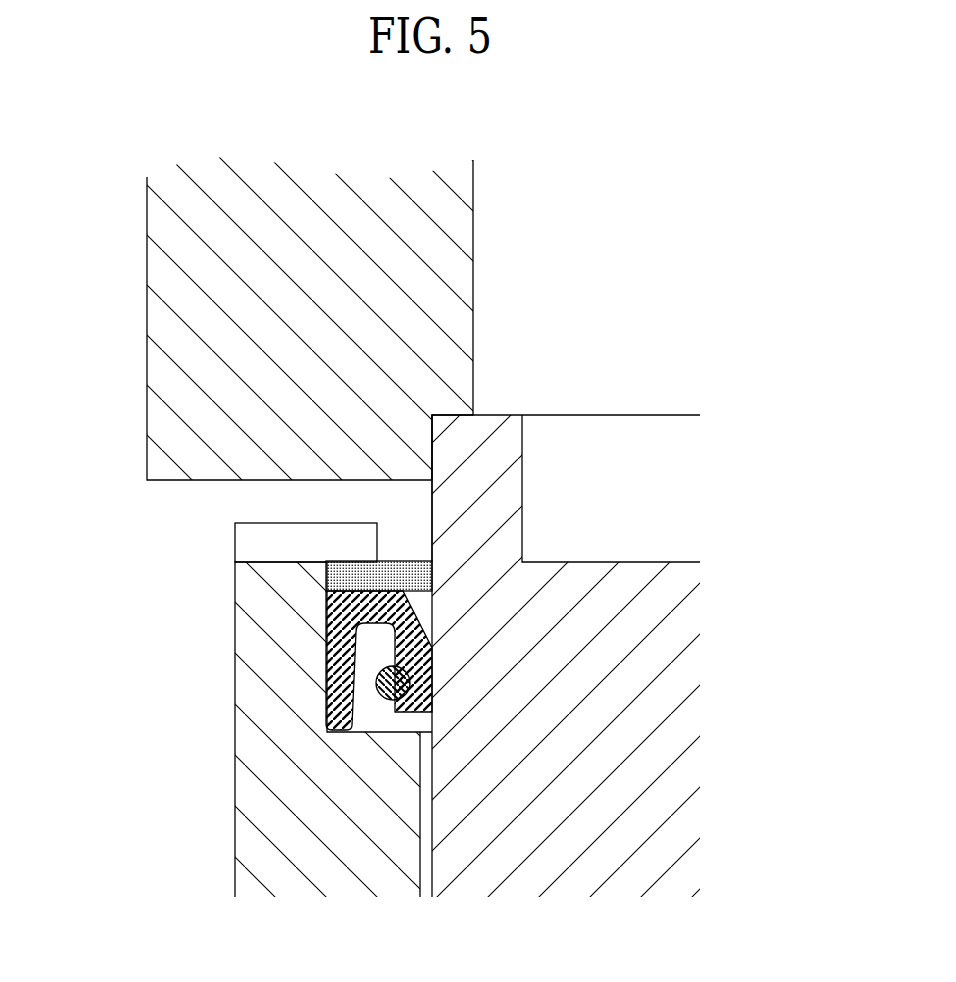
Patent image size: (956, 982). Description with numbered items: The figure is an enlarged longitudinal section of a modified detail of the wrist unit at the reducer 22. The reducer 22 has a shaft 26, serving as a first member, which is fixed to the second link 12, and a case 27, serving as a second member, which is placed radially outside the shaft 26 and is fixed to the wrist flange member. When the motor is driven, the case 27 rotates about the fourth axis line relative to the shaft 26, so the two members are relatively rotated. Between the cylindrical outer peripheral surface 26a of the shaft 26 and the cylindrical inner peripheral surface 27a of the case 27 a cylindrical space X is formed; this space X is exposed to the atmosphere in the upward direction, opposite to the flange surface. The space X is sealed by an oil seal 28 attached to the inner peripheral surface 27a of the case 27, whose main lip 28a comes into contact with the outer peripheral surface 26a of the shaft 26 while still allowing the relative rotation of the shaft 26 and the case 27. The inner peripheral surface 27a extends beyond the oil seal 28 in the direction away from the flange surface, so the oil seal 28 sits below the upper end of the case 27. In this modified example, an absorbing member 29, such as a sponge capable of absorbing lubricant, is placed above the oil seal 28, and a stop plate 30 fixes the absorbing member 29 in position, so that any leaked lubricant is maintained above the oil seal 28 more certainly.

The second link 12 is at (147, 258).
The reducer 22 is at (251, 729).
The shaft 26 is at (433, 599).
The outer peripheral surface 26a is at (432, 496).
The case 27 is at (277, 729).
The inner peripheral surface 27a is at (330, 655).
The oil seal 28 is at (462, 653).
The main lip 28a is at (420, 682).
The absorbing member 29 is at (403, 560).
The stop plate 30 is at (235, 543).
The space X is at (426, 860).